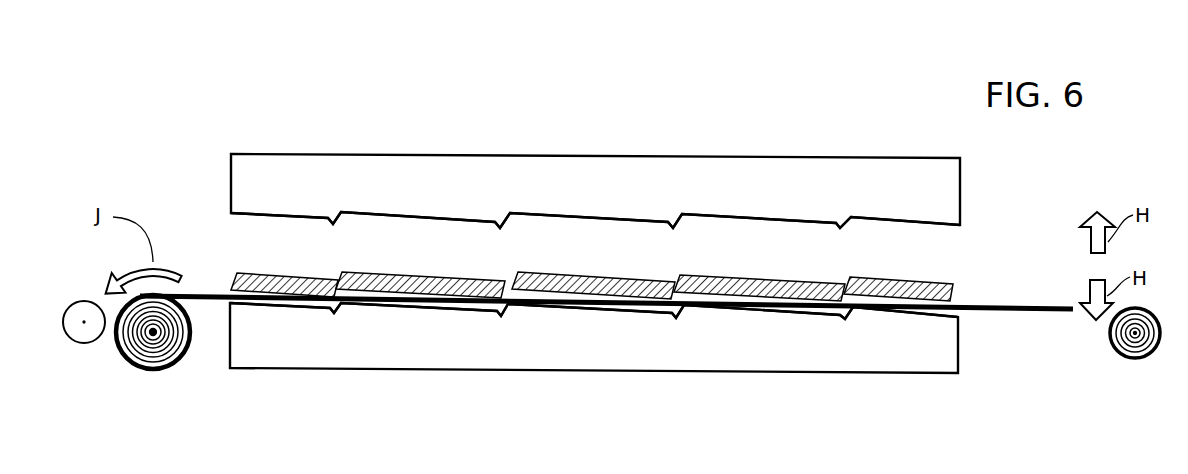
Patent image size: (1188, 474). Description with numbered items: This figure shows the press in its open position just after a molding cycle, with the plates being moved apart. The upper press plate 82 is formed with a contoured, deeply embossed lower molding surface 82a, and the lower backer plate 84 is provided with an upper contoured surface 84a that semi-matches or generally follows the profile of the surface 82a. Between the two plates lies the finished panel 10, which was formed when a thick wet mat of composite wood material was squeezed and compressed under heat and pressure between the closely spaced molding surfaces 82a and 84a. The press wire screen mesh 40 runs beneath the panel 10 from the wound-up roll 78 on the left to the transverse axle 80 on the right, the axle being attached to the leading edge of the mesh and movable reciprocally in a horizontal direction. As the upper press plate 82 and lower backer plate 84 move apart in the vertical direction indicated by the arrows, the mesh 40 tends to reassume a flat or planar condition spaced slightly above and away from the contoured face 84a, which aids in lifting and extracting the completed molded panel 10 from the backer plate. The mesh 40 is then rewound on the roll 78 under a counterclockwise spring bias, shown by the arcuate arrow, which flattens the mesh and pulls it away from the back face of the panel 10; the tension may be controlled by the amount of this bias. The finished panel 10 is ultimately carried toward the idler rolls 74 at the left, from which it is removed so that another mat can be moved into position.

The finished panel 10 is at (363, 277).
The press wire screen mesh 40 is at (972, 303).
The idler rolls 74 is at (83, 343).
The wound-up roll 78 is at (180, 357).
The transverse axle 80 is at (1118, 338).
The upper press plate 82 is at (286, 184).
The lower molding surface 82a is at (621, 220).
The lower backer plate 84 is at (460, 348).
The upper contoured surface 84a is at (824, 306).